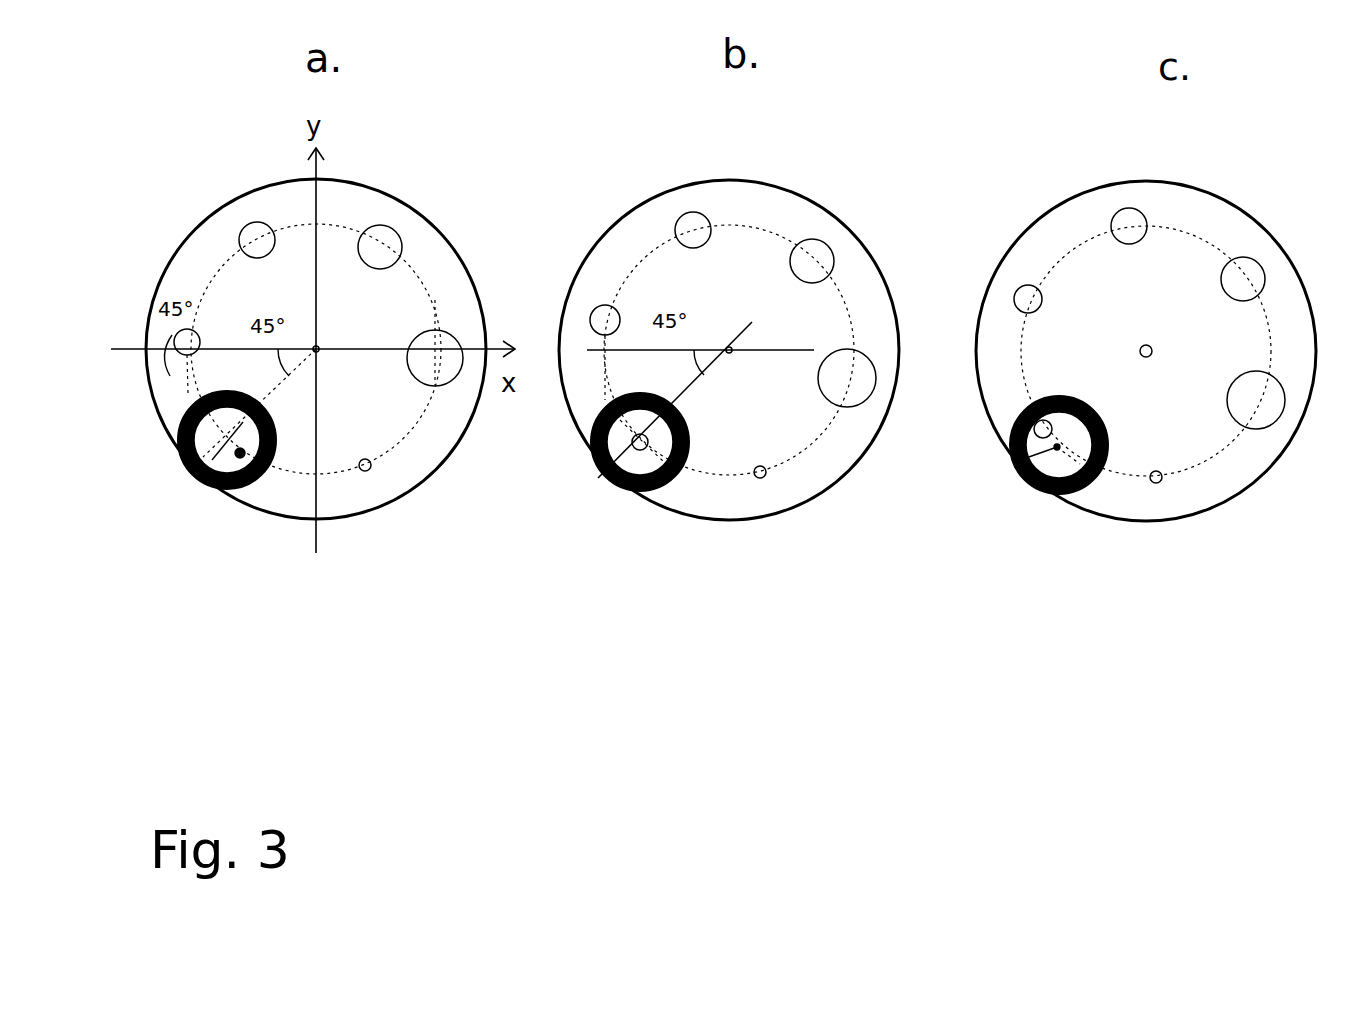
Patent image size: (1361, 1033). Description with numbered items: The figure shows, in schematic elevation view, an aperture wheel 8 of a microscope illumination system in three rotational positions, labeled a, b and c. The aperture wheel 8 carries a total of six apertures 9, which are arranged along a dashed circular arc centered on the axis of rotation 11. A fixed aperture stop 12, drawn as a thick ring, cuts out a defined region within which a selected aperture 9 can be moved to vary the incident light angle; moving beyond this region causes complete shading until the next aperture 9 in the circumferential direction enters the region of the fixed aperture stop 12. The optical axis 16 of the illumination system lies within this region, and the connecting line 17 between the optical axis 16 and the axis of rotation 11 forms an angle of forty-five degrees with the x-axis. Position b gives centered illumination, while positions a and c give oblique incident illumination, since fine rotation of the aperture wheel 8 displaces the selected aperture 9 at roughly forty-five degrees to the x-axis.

The aperture wheel 8 is at (372, 187).
The apertures 9 is at (247, 223).
The axis of rotation 11 is at (318, 348).
The fixed aperture stop 12 is at (177, 403).
The optical axis 16 is at (180, 470).
The connecting line 17 is at (268, 395).